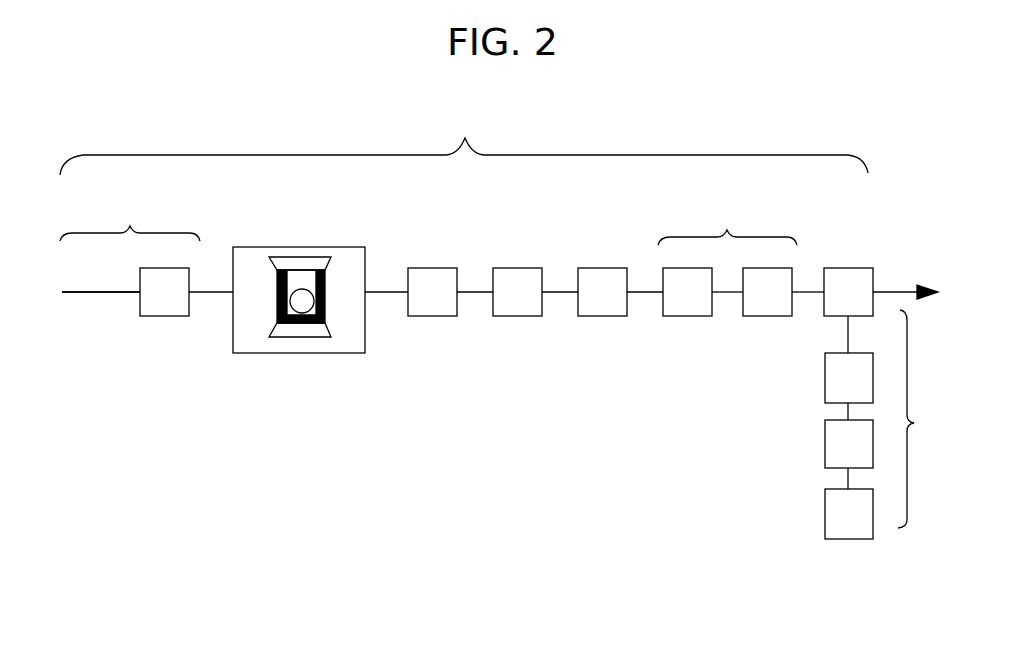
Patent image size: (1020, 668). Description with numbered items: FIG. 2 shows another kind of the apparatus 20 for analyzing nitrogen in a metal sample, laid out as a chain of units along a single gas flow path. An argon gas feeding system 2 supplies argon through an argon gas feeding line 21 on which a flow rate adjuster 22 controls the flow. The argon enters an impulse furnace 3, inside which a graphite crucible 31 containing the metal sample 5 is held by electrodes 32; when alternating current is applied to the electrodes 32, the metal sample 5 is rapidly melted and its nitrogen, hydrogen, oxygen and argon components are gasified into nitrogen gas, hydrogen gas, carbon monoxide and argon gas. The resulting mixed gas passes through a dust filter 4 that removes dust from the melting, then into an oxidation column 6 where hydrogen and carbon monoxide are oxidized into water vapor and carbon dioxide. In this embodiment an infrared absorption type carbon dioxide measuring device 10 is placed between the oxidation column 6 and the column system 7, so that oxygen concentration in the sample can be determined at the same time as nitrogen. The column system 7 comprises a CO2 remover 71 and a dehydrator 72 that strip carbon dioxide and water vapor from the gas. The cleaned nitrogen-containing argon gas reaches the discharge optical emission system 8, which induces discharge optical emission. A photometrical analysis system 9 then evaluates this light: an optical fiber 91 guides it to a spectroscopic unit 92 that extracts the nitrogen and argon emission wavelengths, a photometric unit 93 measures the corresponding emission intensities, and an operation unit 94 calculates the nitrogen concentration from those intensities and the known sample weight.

The apparatus for analyzing nitrogen in a metal sample 20 is at (464, 143).
The argon gas feeding system 2 is at (130, 220).
The argon gas feeding line 21 is at (118, 292).
The flow rate adjuster 22 is at (163, 312).
The impulse furnace 3 is at (245, 257).
The graphite crucible 31 is at (321, 283).
The electrodes 32 is at (300, 262).
The metal sample 5 is at (302, 300).
The dust filter 4 is at (432, 277).
The oxidation column 6 is at (517, 277).
The infrared absorption type carbon dioxide measuring device 10 is at (603, 277).
The column system 7 is at (727, 223).
The CO2 remover 71 is at (686, 310).
The dehydrator 72 is at (767, 310).
The discharge optical emission system 8 is at (850, 277).
The photometrical analysis system 9 is at (915, 419).
The optical fiber 91 is at (848, 335).
The spectroscopic unit 92 is at (830, 395).
The photometric unit 93 is at (830, 460).
The operation unit 94 is at (830, 530).